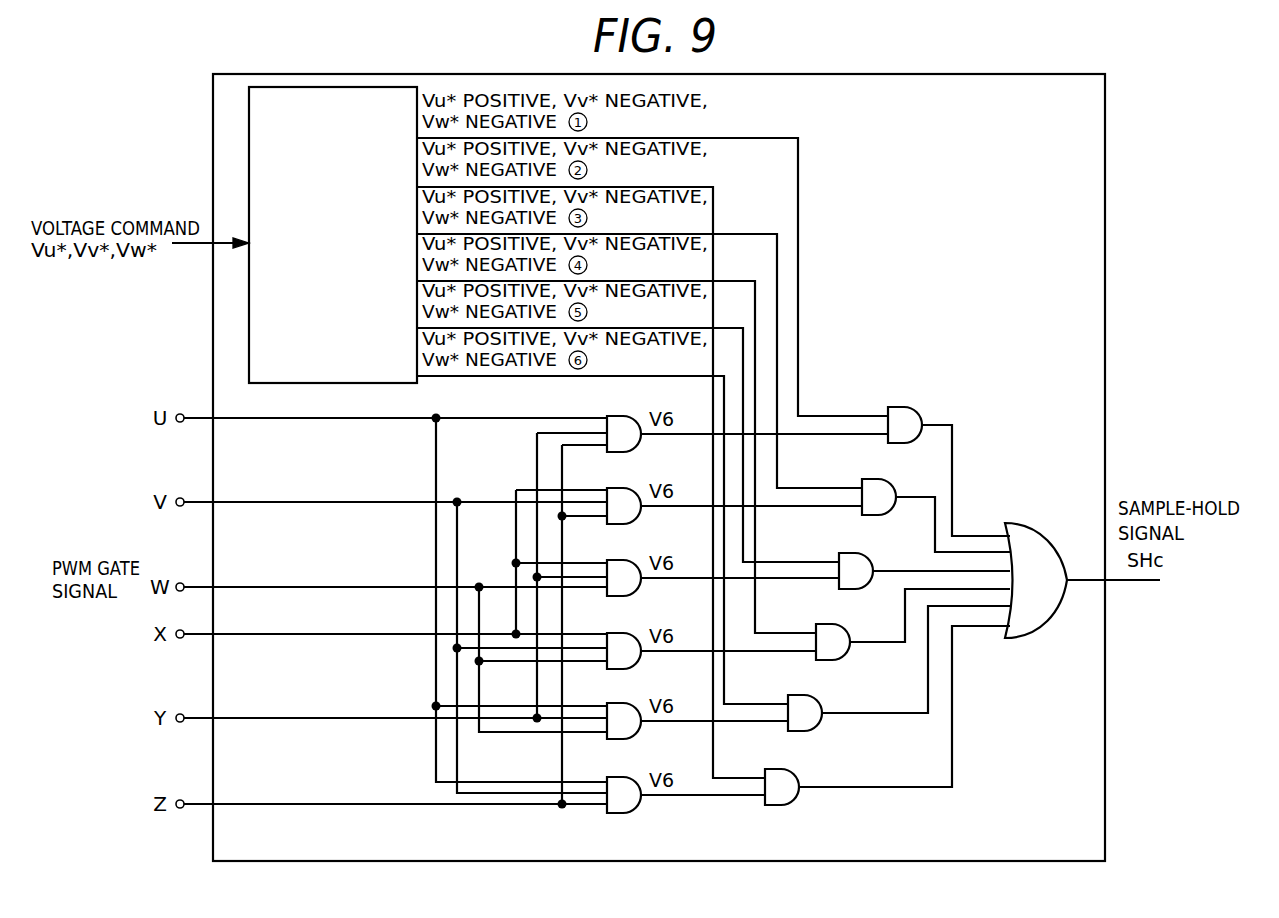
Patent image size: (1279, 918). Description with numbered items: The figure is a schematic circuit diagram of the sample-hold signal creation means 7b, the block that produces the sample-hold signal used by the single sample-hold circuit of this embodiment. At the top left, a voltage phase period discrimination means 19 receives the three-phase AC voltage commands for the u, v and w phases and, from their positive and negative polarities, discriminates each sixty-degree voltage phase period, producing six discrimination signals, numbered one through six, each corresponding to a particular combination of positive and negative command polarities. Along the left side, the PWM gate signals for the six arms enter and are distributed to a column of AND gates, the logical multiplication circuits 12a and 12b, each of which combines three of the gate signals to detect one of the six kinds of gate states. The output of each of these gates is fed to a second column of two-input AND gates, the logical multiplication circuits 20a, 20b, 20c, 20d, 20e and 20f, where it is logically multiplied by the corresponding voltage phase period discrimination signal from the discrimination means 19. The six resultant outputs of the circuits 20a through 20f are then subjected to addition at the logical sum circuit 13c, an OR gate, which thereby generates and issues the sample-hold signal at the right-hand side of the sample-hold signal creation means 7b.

The sample-hold signal creation means 7b is at (905, 843).
The voltage phase period discrimination means 19 is at (287, 383).
The logical multiplication circuit 12a is at (630, 451).
The logical multiplication circuit 12b is at (630, 523).
The logical multiplication circuit 20a is at (903, 438).
The logical multiplication circuit 20b is at (877, 510).
The logical multiplication circuit 20c is at (854, 584).
The logical multiplication circuit 20d is at (831, 655).
The logical multiplication circuit 20e is at (803, 726).
The logical multiplication circuit 20f is at (780, 800).
The logical sum circuit 13c is at (1033, 626).